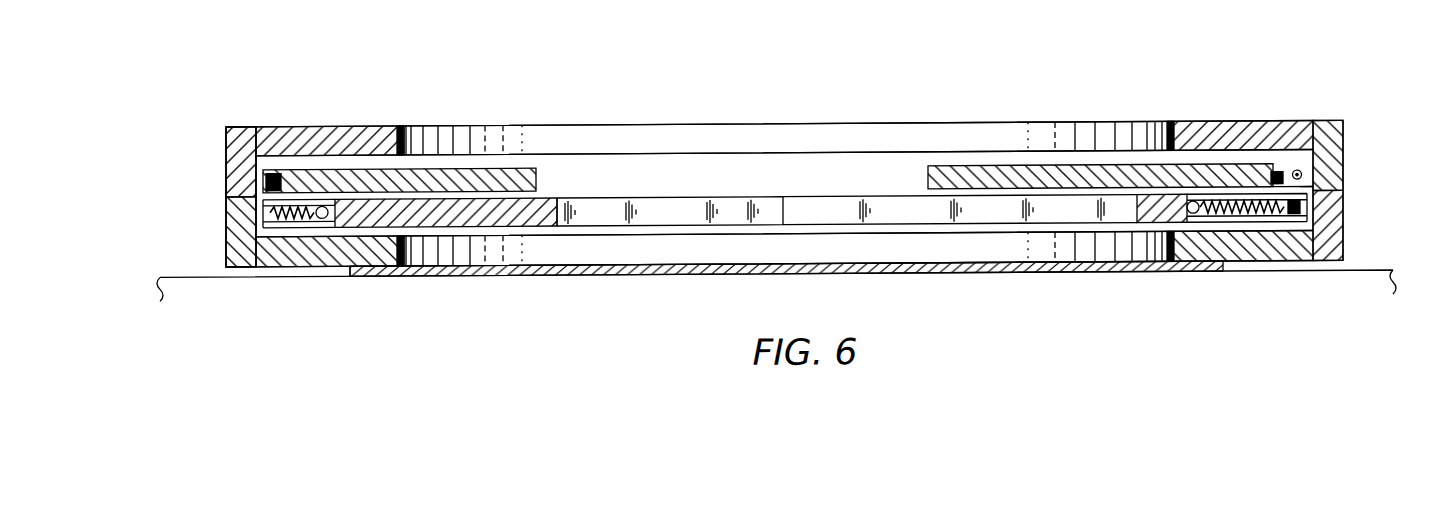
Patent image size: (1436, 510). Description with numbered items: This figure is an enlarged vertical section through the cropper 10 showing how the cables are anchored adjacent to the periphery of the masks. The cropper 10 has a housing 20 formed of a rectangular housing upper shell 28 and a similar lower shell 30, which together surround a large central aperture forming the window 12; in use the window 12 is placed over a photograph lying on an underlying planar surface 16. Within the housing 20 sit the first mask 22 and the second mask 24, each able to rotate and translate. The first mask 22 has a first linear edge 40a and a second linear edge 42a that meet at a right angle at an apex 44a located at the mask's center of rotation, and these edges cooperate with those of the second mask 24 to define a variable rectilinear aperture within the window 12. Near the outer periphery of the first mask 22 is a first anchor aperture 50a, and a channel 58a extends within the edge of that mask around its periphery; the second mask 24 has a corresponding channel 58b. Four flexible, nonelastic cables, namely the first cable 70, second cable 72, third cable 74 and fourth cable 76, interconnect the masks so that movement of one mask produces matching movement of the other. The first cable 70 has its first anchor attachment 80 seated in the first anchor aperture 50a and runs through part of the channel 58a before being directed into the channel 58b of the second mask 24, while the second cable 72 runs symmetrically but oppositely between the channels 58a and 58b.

The cropper 10 is at (931, 73).
The window 12 is at (690, 127).
The planar surface 16 is at (332, 273).
The housing 20 is at (258, 114).
The first mask 22 is at (1138, 209).
The second mask 24 is at (420, 179).
The housing upper shell 28 is at (226, 136).
The housing lower shell 30 is at (226, 225).
The first linear edge of first mask 40a is at (895, 217).
The second linear edge of first mask 42a is at (699, 216).
The apex of first mask 44a is at (784, 228).
The first anchor aperture of first mask 50a is at (1187, 214).
The channel of first mask 58a is at (1305, 215).
The channel of second mask 58b is at (1300, 193).
The first cable 70 is at (267, 182).
The second cable 72 is at (285, 194).
The third cable 74 is at (323, 209).
The fourth cable 76 is at (305, 84).
The first anchor attachment 80 is at (323, 213).